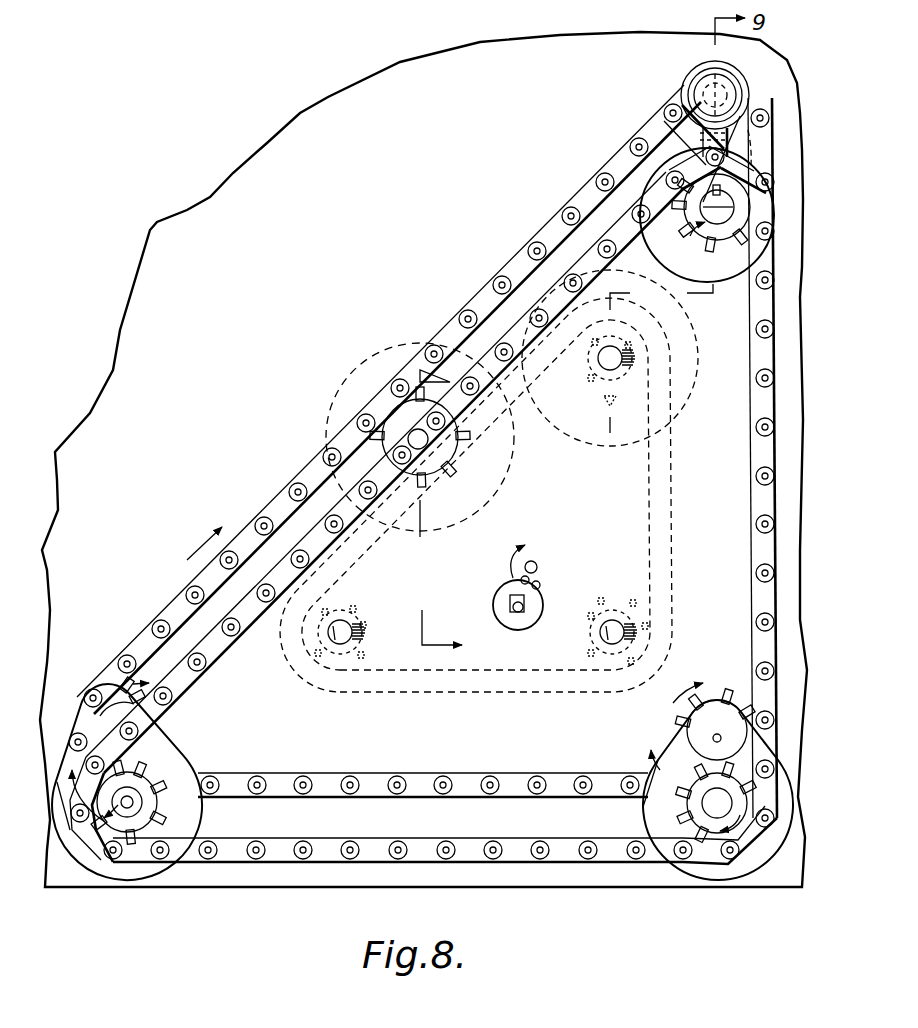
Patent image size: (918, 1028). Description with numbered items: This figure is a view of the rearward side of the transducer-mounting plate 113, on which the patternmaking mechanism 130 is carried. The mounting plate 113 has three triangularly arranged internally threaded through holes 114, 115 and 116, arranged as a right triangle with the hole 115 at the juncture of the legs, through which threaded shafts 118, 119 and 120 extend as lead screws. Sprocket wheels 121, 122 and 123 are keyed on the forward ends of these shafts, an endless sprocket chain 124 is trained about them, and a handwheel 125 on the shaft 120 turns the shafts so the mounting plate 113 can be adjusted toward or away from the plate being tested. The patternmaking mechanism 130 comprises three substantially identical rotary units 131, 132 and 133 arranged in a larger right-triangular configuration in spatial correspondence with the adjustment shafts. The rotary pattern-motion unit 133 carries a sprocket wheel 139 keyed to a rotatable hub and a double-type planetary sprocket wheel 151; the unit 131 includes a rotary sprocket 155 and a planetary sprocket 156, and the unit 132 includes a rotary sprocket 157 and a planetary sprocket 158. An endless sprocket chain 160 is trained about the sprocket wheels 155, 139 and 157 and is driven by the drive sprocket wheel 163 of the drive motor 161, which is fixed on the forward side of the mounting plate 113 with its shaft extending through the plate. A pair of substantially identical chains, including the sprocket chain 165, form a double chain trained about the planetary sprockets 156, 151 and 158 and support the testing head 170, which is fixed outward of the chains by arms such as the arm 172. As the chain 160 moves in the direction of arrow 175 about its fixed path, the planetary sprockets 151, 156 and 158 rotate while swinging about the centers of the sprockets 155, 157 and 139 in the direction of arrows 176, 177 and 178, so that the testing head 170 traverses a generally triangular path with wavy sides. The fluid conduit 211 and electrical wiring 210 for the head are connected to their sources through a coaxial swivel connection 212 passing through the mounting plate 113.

The transducer-mounting plate 113 is at (358, 157).
The threaded through hole 114 is at (331, 638).
The threaded through hole 115 is at (622, 625).
The threaded through hole 116 is at (614, 331).
The threaded shaft 118 is at (340, 644).
The threaded shaft 119 is at (610, 645).
The threaded shaft 120 is at (610, 371).
The sprocket wheel 121 is at (377, 602).
The sprocket wheel 122 is at (600, 587).
The sprocket wheel 123 is at (610, 433).
The endless sprocket chain 124 is at (437, 693).
The handwheel 125 is at (693, 423).
The patternmaking mechanism 130 is at (152, 878).
The rotary unit 131 is at (95, 868).
The rotary unit 132 is at (728, 880).
The rotary pattern-motion unit 133 is at (728, 290).
The sprocket wheel 139 is at (657, 165).
The sprocket wheel 151 is at (711, 225).
The rotary sprocket 155 is at (130, 685).
The planetary sprocket 156 is at (155, 803).
The rotary sprocket 157 is at (720, 698).
The planetary sprocket 158 is at (716, 805).
The endless sprocket chain 160 is at (313, 470).
The drive motor 161 is at (394, 344).
The drive sprocket wheel 163 is at (448, 472).
The sprocket chain 165 is at (213, 652).
The testing head 170 is at (688, 69).
The arm 172 is at (740, 116).
The arrow 175 is at (203, 543).
The arrow 176 is at (127, 802).
The arrow 177 is at (660, 774).
The arrow 178 is at (657, 172).
The electrical wiring 210 is at (540, 573).
The fluid conduit 211 is at (541, 554).
The coaxial swivel connection 212 is at (492, 598).